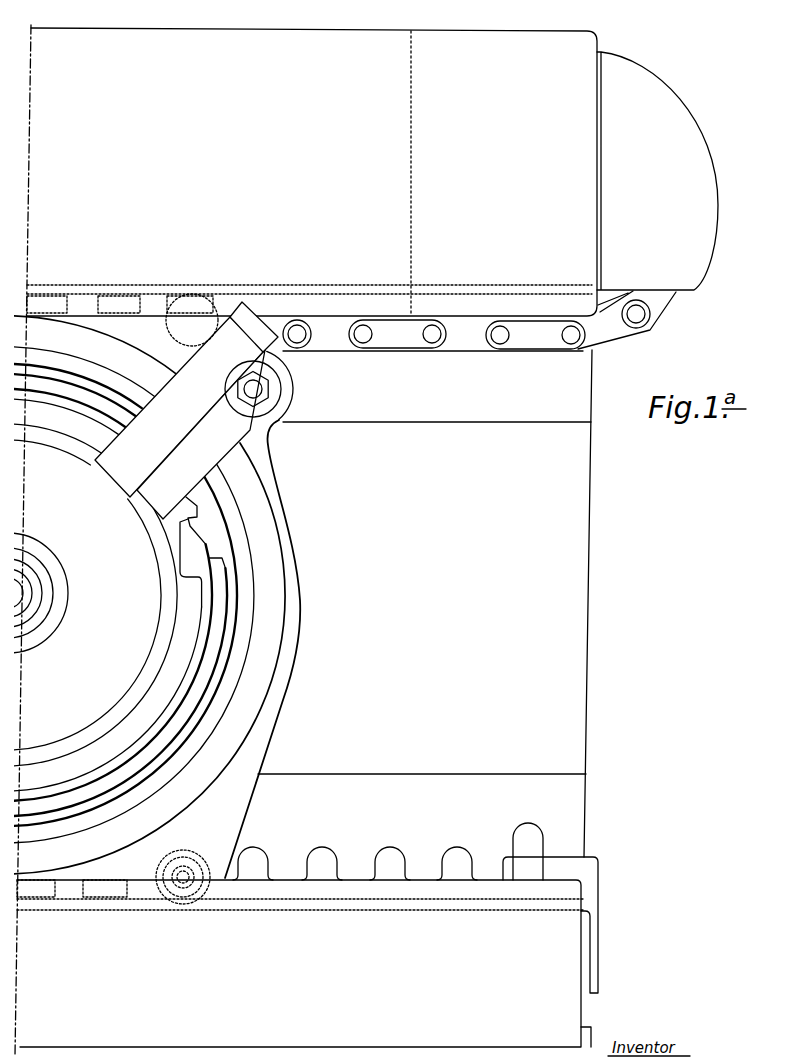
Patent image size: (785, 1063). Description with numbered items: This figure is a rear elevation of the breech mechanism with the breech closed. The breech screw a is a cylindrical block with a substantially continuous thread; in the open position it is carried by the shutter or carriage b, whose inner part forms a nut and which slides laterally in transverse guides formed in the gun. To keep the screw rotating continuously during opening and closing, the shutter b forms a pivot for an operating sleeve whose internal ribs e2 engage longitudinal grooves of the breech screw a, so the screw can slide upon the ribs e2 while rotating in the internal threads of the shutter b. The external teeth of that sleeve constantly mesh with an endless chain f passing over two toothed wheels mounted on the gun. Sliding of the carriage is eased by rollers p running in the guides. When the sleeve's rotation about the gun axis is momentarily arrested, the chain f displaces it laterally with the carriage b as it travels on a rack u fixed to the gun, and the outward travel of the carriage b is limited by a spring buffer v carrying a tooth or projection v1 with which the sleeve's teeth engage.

The breech screw a is at (127, 678).
The shutter or carriage b is at (288, 623).
The internal ribs e2 is at (196, 537).
The endless chain f is at (397, 345).
The rollers p is at (165, 332).
The rack u is at (259, 855).
The tooth or projection v1 is at (533, 835).
The spring buffer v is at (595, 886).